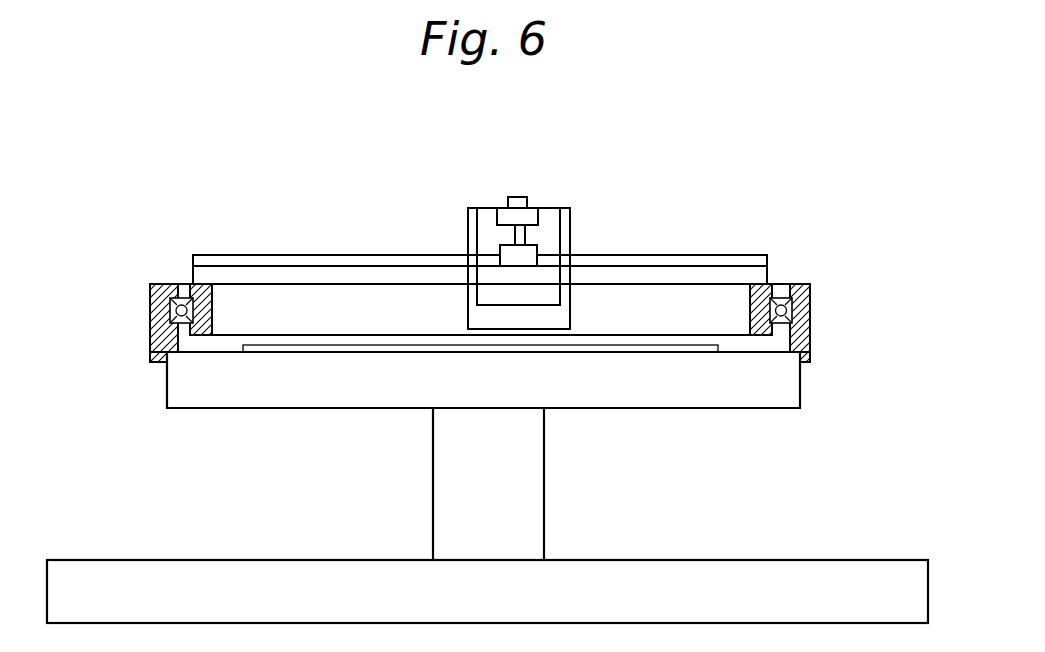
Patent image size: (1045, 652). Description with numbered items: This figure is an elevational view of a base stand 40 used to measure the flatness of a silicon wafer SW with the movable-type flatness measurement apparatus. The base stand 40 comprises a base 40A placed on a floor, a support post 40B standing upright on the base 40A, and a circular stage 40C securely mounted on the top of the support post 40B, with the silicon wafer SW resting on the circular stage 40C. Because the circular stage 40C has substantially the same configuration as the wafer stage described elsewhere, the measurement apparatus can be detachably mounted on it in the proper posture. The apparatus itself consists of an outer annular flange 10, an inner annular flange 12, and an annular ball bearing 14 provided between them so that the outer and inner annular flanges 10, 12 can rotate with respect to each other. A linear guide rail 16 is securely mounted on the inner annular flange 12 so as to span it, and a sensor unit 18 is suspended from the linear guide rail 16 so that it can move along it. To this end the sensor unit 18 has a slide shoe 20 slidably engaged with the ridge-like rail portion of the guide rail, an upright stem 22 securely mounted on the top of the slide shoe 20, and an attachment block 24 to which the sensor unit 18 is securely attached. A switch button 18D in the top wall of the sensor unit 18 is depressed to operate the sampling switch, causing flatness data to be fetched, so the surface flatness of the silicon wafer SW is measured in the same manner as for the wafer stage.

The outer annular flange 10 is at (788, 284).
The inner annular flange 12 is at (212, 305).
The annular ball bearing 14 is at (168, 311).
The linear guide rail 16 is at (308, 250).
The sensor unit 18 is at (570, 219).
The switch button 18D is at (518, 198).
The slide shoe 20 is at (516, 266).
The upright stem 22 is at (517, 235).
The attachment block 24 is at (505, 217).
The silicon wafer SW is at (718, 352).
The base stand 40 is at (487, 487).
The base 40A is at (762, 577).
The support post 40B is at (433, 493).
The circular stage 40C is at (225, 392).